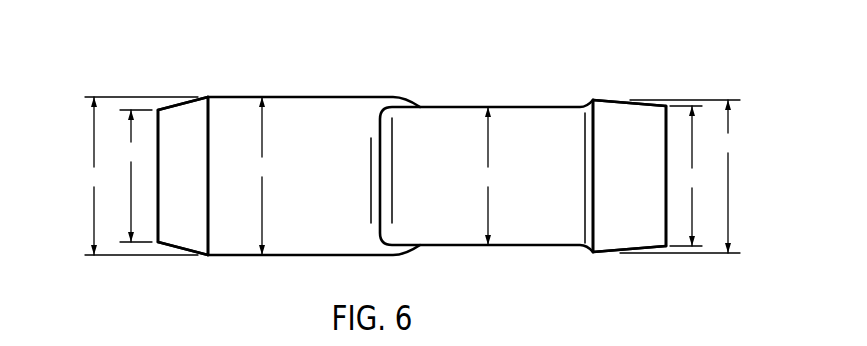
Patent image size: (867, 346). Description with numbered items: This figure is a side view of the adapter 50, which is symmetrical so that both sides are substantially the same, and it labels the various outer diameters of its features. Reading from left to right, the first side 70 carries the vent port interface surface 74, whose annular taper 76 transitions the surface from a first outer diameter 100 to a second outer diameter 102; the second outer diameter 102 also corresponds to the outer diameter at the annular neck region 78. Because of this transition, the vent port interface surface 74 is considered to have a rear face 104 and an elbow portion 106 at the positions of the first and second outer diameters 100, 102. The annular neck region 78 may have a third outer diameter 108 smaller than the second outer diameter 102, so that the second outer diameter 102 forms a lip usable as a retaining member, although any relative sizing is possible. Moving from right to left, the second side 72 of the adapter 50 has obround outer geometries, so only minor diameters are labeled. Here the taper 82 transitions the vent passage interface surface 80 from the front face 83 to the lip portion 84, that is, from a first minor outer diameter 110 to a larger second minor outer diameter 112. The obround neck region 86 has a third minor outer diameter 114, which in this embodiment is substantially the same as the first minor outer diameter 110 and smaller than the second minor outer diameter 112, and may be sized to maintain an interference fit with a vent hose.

The adapter 50 is at (478, 133).
The first side 70 is at (170, 148).
The second side 72 is at (655, 146).
The vent port interface surface 74 is at (179, 263).
The annular taper 76 is at (162, 90).
The annular neck region 78 is at (314, 165).
The vent passage interface surface 80 is at (630, 262).
The taper 82 is at (647, 86).
The front face 83 is at (694, 176).
The lip portion 84 is at (578, 161).
The obround neck region 86 is at (486, 164).
The first outer diameter 100 is at (136, 176).
The second outer diameter 102 is at (140, 176).
The rear face 104 is at (103, 176).
The elbow portion 106 is at (228, 161).
The third outer diameter 108 is at (263, 176).
The first minor outer diameter 110 is at (681, 176).
The second minor outer diameter 112 is at (688, 176).
The third minor outer diameter 114 is at (488, 176).